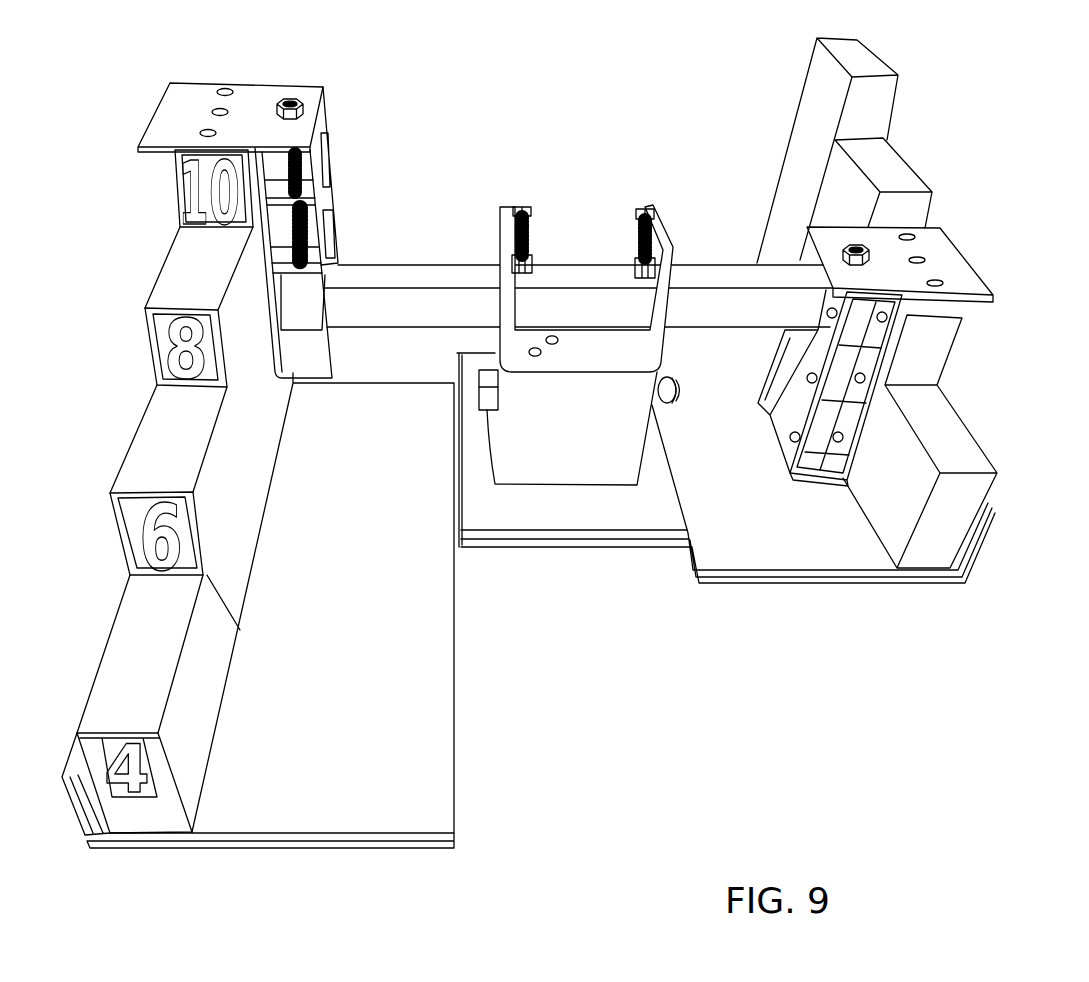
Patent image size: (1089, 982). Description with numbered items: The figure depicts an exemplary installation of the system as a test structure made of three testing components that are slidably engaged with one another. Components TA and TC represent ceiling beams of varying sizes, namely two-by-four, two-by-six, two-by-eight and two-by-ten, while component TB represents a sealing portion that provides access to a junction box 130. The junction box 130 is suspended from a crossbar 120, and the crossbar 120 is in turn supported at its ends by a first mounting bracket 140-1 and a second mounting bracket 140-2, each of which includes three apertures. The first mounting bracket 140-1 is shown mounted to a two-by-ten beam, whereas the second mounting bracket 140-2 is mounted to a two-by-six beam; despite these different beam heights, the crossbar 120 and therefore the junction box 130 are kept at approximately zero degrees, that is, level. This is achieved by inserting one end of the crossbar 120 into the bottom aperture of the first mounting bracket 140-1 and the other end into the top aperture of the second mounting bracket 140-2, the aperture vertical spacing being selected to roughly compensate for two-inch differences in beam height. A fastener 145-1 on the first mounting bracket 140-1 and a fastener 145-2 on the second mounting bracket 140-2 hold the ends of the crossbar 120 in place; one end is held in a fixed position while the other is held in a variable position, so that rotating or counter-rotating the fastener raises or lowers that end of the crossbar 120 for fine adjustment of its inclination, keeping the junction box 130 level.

The first mounting bracket 140-1 is at (162, 130).
The fastener 145-1 is at (303, 100).
The crossbar 120 is at (720, 278).
The junction box 130 is at (625, 440).
The fastener 145-2 is at (852, 247).
The second mounting bracket 140-2 is at (967, 285).
The testing component TA is at (455, 719).
The testing component TB is at (593, 543).
The testing component TC is at (838, 588).